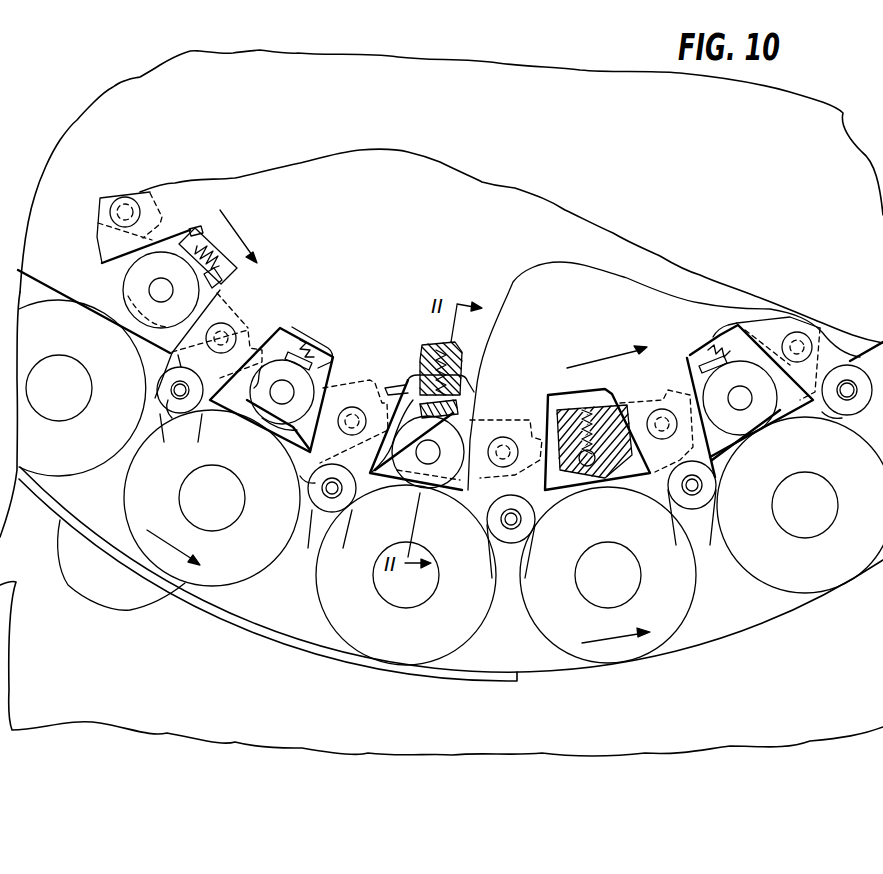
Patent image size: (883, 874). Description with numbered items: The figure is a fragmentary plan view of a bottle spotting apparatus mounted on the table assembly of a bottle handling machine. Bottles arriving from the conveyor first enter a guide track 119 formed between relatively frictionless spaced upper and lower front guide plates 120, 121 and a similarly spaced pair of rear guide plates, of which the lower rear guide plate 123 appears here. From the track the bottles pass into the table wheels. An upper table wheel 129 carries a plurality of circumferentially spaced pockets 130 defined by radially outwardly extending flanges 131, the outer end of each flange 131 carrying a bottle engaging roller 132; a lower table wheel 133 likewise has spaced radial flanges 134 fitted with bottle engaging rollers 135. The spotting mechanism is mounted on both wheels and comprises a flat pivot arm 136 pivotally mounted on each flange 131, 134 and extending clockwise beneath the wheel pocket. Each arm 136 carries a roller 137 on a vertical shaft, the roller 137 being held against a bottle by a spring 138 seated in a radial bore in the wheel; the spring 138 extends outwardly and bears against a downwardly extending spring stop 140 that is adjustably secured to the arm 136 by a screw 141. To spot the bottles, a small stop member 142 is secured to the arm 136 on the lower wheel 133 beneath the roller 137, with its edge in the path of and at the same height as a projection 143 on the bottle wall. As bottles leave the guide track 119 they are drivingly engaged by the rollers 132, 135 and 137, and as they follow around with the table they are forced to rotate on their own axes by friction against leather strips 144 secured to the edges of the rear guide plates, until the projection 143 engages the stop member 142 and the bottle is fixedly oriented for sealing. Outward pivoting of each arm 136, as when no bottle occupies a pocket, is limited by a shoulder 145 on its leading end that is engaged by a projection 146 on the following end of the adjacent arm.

The guide track 119 is at (80, 483).
The upper front guide plate 120 is at (90, 126).
The lower front guide plate 121 is at (158, 333).
The lower rear guide plate 123 is at (87, 547).
The upper table wheel 129 is at (462, 388).
The pockets 130 is at (173, 336).
The flanges 131 is at (166, 414).
The bottle engaging roller 132 is at (177, 417).
The lower table wheel 133 is at (642, 292).
The radial flanges 134 is at (323, 520).
The bottle engaging rollers 135 is at (344, 503).
The pivot arm 136 is at (178, 247).
The roller 137 is at (138, 289).
The spring 138 is at (222, 270).
The spring stop 140 is at (216, 290).
The screw 141 is at (560, 413).
The stop member 142 is at (440, 493).
The projection 143 is at (214, 410).
The leather strips 144 is at (289, 643).
The shoulder 145 is at (142, 240).
The projection 146 is at (150, 222).